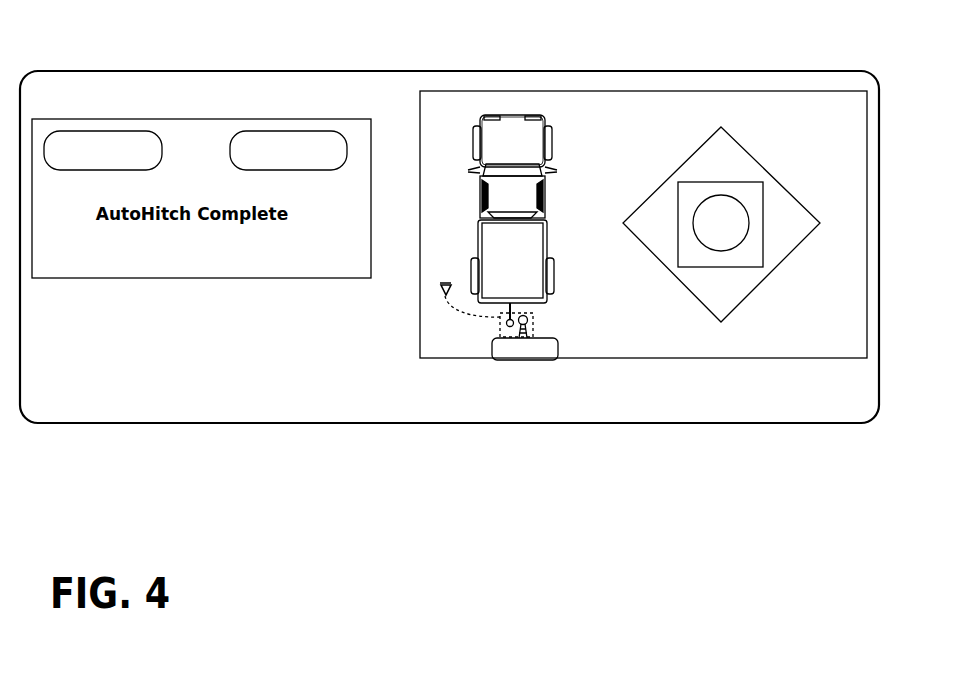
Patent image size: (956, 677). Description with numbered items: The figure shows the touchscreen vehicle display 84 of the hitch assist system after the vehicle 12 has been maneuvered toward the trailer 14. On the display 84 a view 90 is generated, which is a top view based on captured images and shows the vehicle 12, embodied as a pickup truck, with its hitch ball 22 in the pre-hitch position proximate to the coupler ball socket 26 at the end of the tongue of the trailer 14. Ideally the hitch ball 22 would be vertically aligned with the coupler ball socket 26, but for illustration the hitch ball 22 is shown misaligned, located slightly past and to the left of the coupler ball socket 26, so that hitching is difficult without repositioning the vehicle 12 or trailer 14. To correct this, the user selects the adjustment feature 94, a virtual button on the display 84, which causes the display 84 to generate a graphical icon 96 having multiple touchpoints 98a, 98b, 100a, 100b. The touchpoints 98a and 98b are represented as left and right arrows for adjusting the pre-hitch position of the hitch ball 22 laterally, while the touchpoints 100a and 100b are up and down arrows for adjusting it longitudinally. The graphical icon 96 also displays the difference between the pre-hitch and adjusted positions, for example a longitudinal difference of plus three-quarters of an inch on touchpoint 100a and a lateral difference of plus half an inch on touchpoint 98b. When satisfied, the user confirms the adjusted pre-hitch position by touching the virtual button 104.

The touchscreen vehicle display 84 is at (530, 70).
The view 90 is at (797, 118).
The virtual button 104 is at (100, 131).
The adjustment feature 94 is at (287, 131).
The vehicle 12 is at (480, 230).
The hitch ball 22 is at (503, 323).
The coupler ball socket 26 is at (530, 319).
The trailer 14 is at (540, 350).
The graphical icon 96 is at (775, 181).
The touchpoint 98a is at (645, 225).
The touchpoint 98b is at (790, 236).
The touchpoint 100a is at (718, 147).
The touchpoint 100b is at (724, 290).